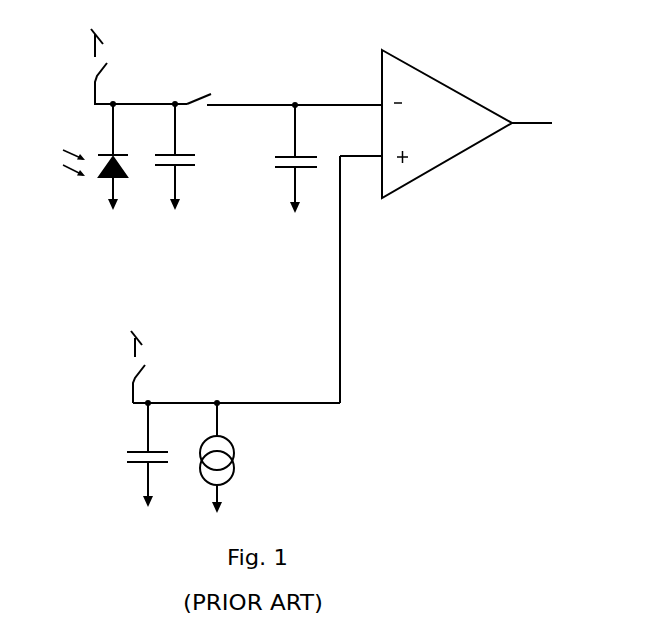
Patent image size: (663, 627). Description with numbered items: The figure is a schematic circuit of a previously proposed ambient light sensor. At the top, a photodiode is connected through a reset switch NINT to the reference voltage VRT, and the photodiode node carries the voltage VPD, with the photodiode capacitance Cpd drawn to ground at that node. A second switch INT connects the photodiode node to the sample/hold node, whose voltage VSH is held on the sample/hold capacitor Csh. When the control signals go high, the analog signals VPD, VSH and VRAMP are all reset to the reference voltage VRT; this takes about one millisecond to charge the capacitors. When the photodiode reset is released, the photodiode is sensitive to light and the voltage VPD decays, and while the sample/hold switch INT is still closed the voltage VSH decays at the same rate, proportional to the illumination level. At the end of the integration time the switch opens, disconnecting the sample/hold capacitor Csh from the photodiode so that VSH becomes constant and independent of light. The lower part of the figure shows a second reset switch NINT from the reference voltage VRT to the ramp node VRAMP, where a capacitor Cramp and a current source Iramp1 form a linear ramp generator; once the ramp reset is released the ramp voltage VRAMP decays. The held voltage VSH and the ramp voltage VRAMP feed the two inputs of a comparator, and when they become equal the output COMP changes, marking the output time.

The reference voltage VRT is at (115, 184).
The reset (non-integrate) switch NINT is at (116, 230).
The photodiode voltage VPD is at (146, 93).
The integrate switch INT is at (204, 85).
The photodiode capacitance Cpd is at (187, 157).
The sample/hold voltage VSH is at (318, 89).
The sample-and-hold capacitor Csh is at (286, 159).
The comparator output signal COMP is at (472, 124).
The ramp voltage VRAMP is at (226, 389).
The ramp capacitor Cramp is at (126, 455).
The ramp current source Iramp1 is at (260, 458).